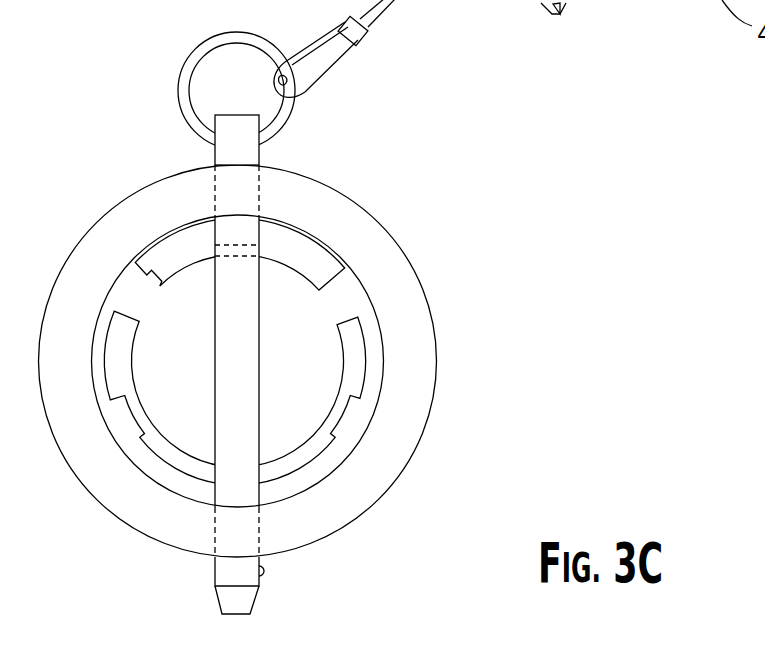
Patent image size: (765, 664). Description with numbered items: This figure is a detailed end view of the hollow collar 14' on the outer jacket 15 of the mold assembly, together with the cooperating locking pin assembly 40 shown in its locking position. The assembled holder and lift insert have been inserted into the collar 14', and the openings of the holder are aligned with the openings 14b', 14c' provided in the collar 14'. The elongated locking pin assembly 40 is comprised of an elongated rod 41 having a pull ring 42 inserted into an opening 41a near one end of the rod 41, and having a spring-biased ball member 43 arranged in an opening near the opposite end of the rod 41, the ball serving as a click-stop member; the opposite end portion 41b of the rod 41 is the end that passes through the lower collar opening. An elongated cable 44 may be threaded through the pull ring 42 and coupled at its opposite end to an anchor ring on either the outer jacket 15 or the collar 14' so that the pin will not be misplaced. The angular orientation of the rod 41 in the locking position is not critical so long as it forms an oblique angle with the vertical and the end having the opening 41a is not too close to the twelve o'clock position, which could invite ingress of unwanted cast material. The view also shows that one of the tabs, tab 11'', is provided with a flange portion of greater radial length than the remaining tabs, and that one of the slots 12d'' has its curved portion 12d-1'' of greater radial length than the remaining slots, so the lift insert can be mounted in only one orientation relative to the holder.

The hollow collar 14' is at (254, 361).
The slot 12d'' is at (284, 339).
The curved portion 12d-1'' is at (385, 254).
The tab 11'' is at (127, 242).
The elongated locking pin assembly 40 is at (227, 330).
The elongated rod 41 is at (233, 445).
The opening 41a is at (233, 123).
The pin tip 41b is at (243, 597).
The spring-biased ball member 43 is at (263, 570).
The opening 14b' is at (166, 175).
The opening 14c' is at (191, 561).
The pull ring 42 is at (288, 113).
The elongated cable 44 is at (335, 67).
The outer jacket 15 is at (590, 0).